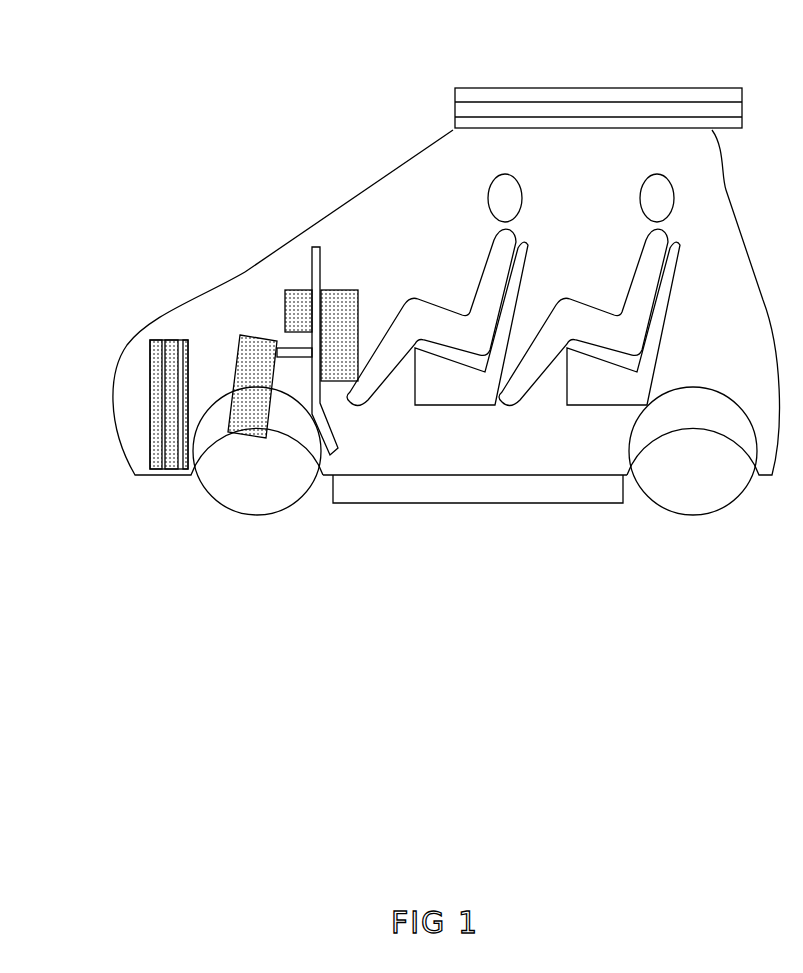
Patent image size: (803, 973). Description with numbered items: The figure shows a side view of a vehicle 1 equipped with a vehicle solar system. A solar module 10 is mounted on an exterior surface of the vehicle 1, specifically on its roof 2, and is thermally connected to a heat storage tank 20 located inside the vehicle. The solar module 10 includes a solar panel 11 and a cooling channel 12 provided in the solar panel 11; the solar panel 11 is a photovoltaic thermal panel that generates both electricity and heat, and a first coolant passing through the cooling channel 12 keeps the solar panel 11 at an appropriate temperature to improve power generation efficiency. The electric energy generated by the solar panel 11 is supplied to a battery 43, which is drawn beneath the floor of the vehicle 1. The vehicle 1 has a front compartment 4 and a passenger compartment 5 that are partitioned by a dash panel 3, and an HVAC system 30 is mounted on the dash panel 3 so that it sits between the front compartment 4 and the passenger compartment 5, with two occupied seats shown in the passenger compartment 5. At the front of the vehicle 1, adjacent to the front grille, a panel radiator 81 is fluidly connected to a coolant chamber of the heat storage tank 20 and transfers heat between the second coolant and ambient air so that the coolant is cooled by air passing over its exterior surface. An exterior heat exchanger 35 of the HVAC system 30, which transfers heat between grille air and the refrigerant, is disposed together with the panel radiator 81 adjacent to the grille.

The vehicle 1 is at (278, 138).
The roof 2 is at (443, 127).
The dash panel 3 is at (320, 246).
The front compartment 4 is at (242, 300).
The passenger compartment 5 is at (566, 198).
The solar module 10 is at (598, 65).
The solar panel 11 is at (673, 98).
The cooling channel 12 is at (713, 112).
The heat storage tank 20 is at (296, 288).
The HVAC system 30 is at (226, 327).
The exterior heat exchanger 35 is at (168, 432).
The battery 43 is at (480, 488).
The panel radiator 81 is at (124, 404).